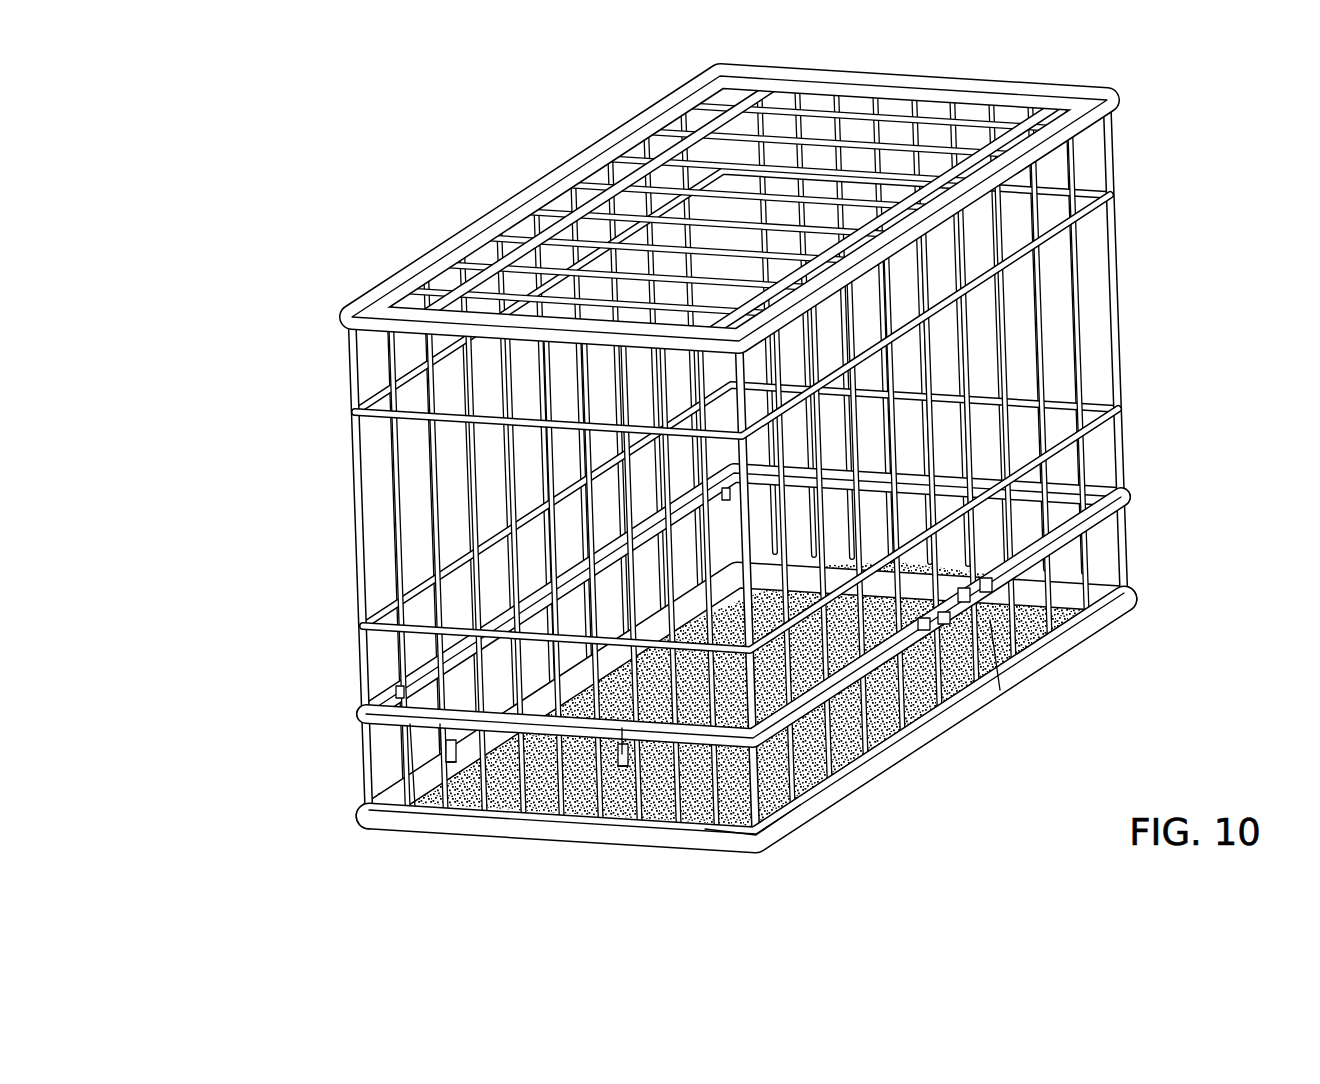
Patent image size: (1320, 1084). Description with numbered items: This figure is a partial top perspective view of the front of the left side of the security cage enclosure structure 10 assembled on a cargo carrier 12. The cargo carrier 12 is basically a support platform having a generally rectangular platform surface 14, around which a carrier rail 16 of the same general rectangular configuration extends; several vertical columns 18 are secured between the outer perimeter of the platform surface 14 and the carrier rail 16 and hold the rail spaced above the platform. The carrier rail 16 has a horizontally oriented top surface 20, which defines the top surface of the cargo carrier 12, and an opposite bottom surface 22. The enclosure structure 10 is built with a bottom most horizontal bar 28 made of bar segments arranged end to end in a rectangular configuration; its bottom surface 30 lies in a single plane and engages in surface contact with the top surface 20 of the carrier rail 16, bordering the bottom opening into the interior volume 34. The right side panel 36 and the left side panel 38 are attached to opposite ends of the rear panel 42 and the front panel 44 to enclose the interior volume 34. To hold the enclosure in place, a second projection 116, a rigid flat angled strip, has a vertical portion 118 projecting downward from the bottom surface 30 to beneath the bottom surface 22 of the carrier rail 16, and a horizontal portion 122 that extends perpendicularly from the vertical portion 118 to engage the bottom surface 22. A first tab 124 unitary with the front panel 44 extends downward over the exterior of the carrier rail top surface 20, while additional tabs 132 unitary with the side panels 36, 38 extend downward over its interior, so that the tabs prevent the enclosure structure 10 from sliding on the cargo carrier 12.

The security cage enclosure structure 10 is at (673, 507).
The cargo carrier 12 is at (709, 710).
The platform surface 14 is at (860, 745).
The carrier rail 16 is at (1000, 645).
The vertical columns 18 is at (1123, 565).
The top surface of carrier rail 20 is at (555, 738).
The bottom surface of carrier rail 22 is at (593, 752).
The bottom most horizontal bar 28 is at (993, 590).
The bottom surface of bottom bar 30 is at (745, 836).
The interior volume 34 is at (495, 475).
The right side panel 36 is at (1118, 345).
The left side panel 38 is at (350, 572).
The rear panel 42 is at (385, 517).
The front panel 44 is at (1095, 460).
The second projection 116 is at (620, 740).
The vertical portion 118 is at (447, 764).
The horizontal portion 122 is at (451, 762).
The first tab 124 is at (944, 626).
The additional tabs 132 is at (730, 498).